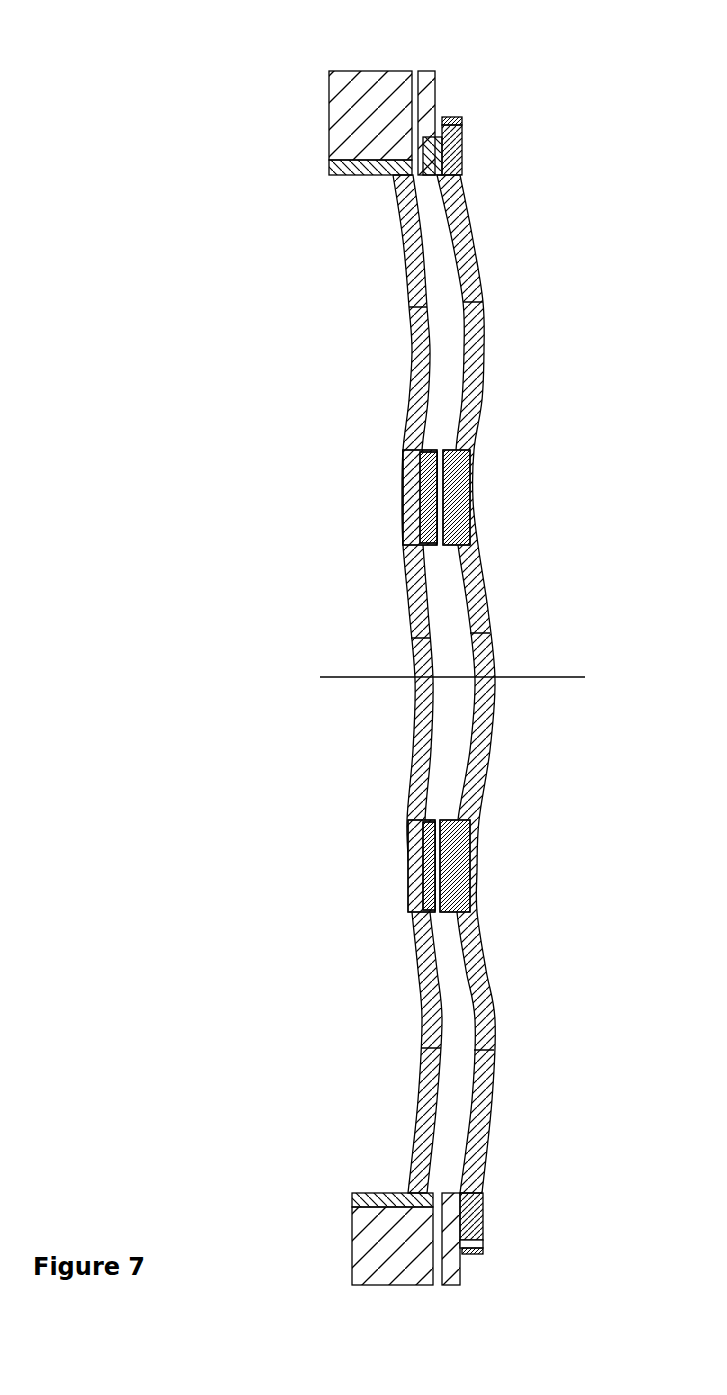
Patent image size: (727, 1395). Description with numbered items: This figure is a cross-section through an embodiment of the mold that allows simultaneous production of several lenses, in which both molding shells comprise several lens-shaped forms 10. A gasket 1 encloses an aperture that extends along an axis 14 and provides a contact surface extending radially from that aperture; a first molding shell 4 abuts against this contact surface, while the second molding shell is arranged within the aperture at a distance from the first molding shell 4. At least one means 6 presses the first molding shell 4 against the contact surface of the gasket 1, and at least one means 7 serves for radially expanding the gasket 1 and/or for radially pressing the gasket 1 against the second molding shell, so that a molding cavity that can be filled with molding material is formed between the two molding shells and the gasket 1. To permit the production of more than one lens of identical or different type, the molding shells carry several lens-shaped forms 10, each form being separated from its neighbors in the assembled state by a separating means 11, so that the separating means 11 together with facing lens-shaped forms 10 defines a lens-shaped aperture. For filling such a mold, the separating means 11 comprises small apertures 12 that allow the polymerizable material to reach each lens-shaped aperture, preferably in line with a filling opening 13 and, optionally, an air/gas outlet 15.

The gasket 1 is at (353, 172).
The first molding shell 4 is at (470, 247).
The means for pressing the first molding shell 6 is at (462, 145).
The means for radially expanding the gasket 7 is at (345, 108).
The lens-shaped forms 10 is at (412, 289).
The separating means 11 is at (452, 502).
The small apertures 12 is at (442, 515).
The filling opening 13 is at (437, 1288).
The axis 14 is at (469, 672).
The air/gas outlet 15 is at (415, 70).